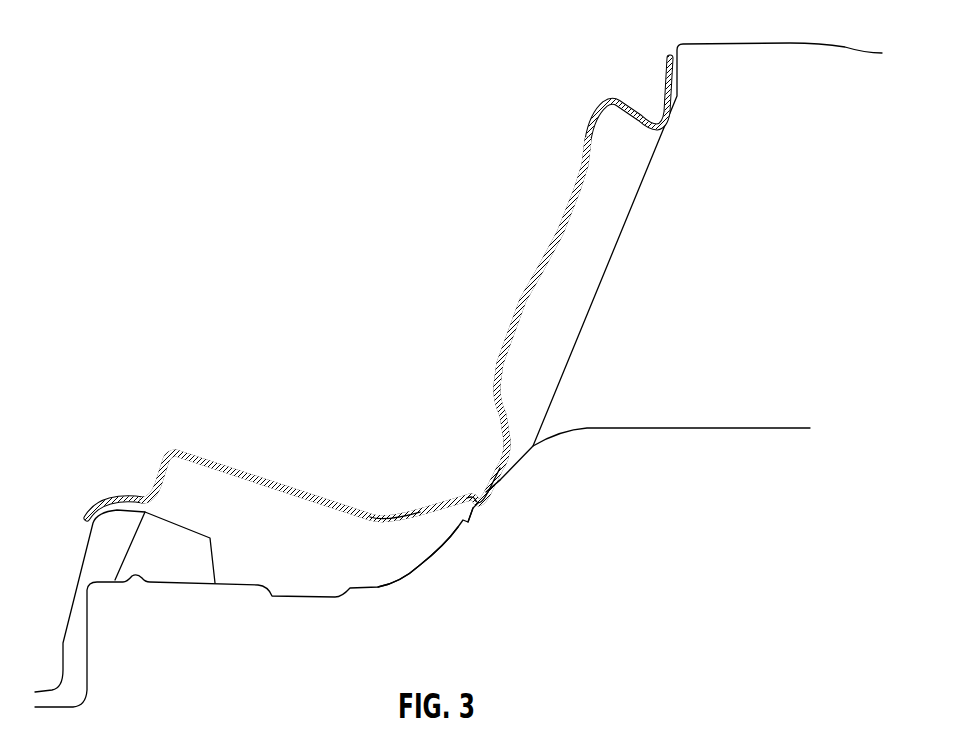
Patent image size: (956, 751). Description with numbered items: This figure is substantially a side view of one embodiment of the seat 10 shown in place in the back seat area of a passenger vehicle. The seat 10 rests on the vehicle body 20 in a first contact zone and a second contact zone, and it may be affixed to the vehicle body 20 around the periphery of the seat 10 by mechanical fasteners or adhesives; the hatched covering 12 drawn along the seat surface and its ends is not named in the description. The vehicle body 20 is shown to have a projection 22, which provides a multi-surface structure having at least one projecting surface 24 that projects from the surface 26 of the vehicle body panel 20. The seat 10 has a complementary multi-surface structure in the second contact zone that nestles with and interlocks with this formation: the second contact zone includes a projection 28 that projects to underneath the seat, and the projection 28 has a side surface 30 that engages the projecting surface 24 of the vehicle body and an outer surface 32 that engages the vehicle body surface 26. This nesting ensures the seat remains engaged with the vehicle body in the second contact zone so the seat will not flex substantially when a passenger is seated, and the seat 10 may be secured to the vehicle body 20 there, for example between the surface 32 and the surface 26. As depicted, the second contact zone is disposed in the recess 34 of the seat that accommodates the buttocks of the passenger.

The seat 10 is at (291, 485).
The trim cover 12 is at (112, 497).
The vehicle body 20 is at (611, 252).
The projection 22 is at (465, 519).
The projecting surface 24 is at (475, 510).
The surface of the vehicle body panel 26 is at (500, 478).
The projection 28 is at (487, 488).
The side surface 30 is at (472, 495).
The outer surface 32 is at (495, 476).
The recess 34 is at (405, 448).